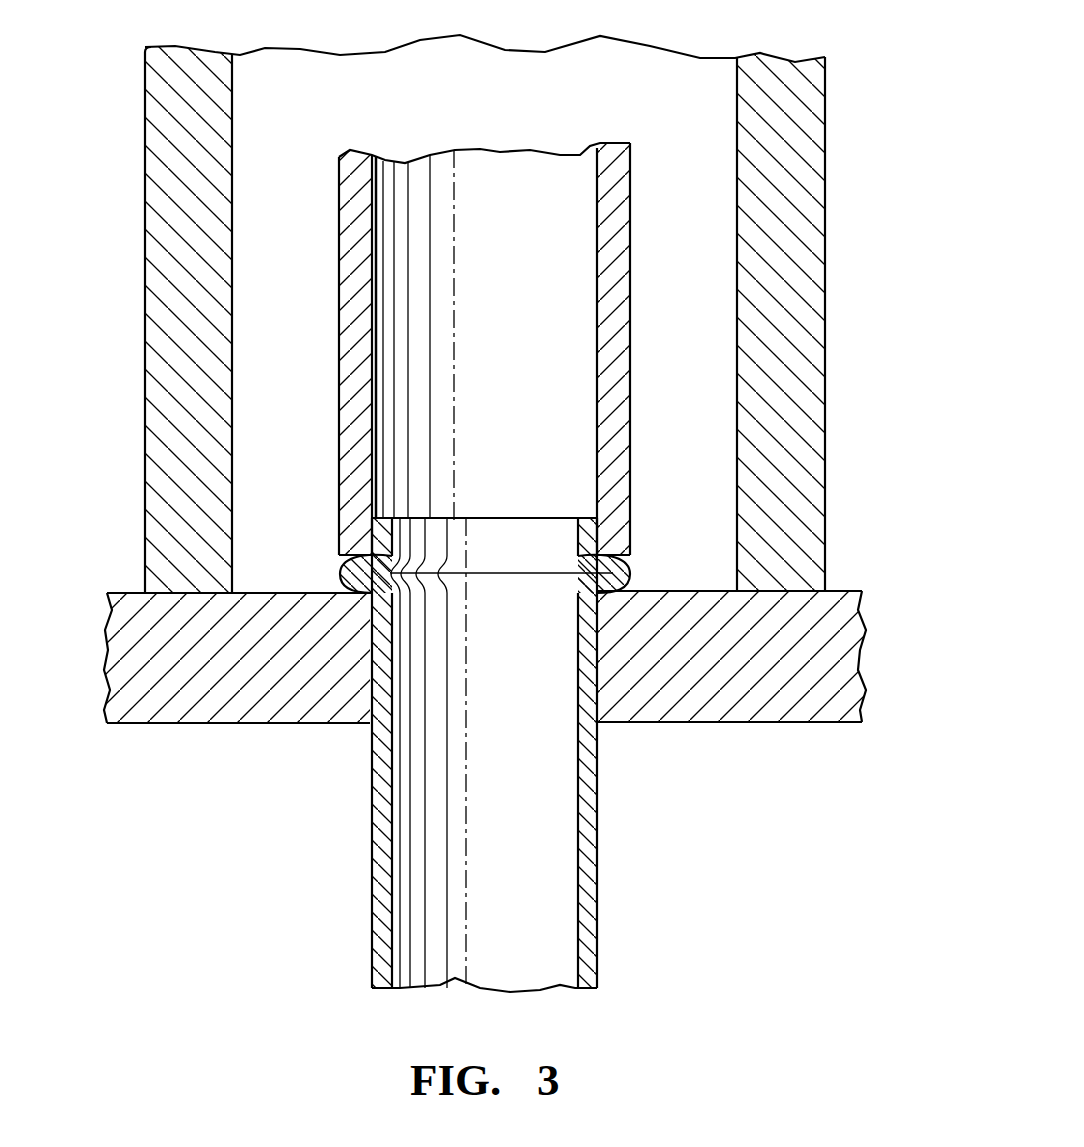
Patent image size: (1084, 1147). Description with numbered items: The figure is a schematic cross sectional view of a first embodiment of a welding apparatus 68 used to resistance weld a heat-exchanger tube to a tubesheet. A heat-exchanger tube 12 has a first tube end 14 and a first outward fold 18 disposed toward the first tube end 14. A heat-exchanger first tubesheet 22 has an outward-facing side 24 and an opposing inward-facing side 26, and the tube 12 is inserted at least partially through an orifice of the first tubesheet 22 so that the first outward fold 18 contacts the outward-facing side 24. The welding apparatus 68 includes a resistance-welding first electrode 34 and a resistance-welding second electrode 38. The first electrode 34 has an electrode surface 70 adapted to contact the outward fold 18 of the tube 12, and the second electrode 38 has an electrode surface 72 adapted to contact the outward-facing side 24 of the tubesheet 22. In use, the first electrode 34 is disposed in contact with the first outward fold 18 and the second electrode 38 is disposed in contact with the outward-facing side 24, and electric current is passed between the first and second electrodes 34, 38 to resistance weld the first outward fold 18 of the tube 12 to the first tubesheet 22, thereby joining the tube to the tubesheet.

The heat-exchanger tube 12 is at (605, 913).
The first tube end 14 is at (591, 516).
The first outward fold 18 is at (343, 574).
The first tubesheet 22 is at (181, 733).
The outward-facing side 24 is at (833, 590).
The inward-facing side 26 is at (833, 723).
The first electrode 34 is at (328, 176).
The second electrode 38 is at (832, 239).
The welding apparatus 68 is at (98, 101).
The electrode surface 70 is at (630, 568).
The electrode surface 72 is at (160, 602).